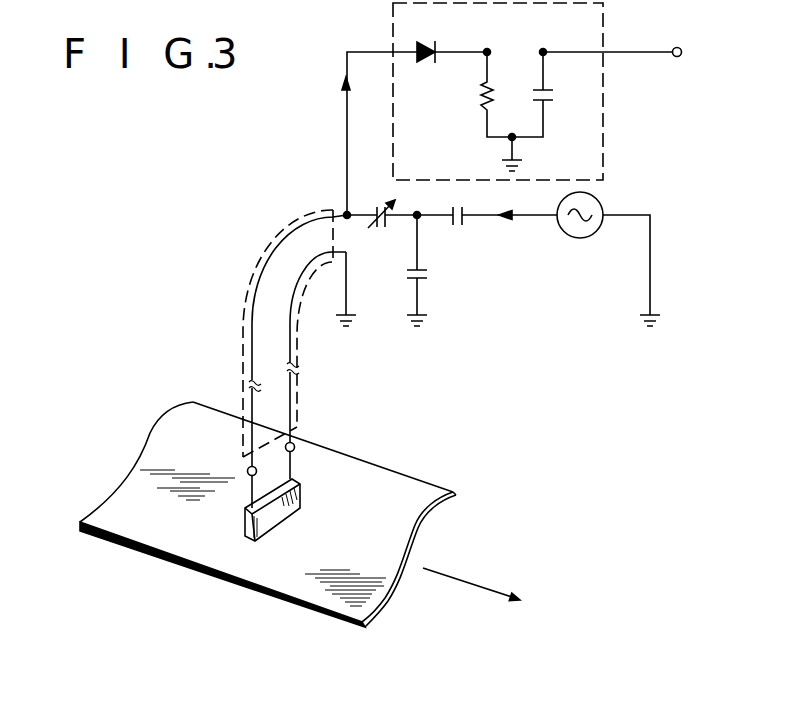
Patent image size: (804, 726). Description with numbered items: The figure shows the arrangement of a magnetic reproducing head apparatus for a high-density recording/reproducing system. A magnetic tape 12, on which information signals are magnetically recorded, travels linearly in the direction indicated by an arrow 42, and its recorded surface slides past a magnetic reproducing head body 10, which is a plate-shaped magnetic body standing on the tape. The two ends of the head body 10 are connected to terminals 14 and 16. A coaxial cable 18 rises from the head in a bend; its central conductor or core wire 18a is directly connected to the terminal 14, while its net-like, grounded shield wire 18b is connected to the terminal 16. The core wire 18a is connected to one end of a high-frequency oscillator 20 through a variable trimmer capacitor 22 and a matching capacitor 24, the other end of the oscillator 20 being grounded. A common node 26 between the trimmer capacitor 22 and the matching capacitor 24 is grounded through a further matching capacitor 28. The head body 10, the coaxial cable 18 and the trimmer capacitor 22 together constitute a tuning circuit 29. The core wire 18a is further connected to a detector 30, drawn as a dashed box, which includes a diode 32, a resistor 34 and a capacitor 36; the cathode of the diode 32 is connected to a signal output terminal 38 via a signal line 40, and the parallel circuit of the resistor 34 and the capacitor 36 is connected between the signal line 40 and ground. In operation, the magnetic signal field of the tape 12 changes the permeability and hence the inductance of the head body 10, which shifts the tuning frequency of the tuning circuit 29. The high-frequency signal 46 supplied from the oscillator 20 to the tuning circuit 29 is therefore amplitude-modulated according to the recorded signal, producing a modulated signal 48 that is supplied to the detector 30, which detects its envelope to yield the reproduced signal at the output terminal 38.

The magnetic reproducing head body 10 is at (291, 510).
The magnetic tape 12 is at (408, 482).
The terminal 14 is at (247, 471).
The terminal 16 is at (294, 446).
The coaxial cable 18 is at (243, 336).
The core wire 18a is at (258, 298).
The shield wire 18b is at (293, 382).
The high-frequency oscillator 20 is at (591, 233).
The trimmer capacitor 22 is at (372, 202).
The matching capacitor 24 is at (464, 220).
The common node 26 is at (420, 218).
The matching capacitor 28 is at (429, 273).
The tuning circuit 29 is at (296, 216).
The detector 30 is at (604, 141).
The diode 32 is at (430, 60).
The resistor 34 is at (484, 102).
The capacitor 36 is at (550, 100).
The signal output terminal 38 is at (679, 57).
The signal line 40 is at (625, 54).
The arrow 42 is at (478, 586).
The high-frequency signal 46 is at (528, 218).
The modulated signal 48 is at (347, 111).